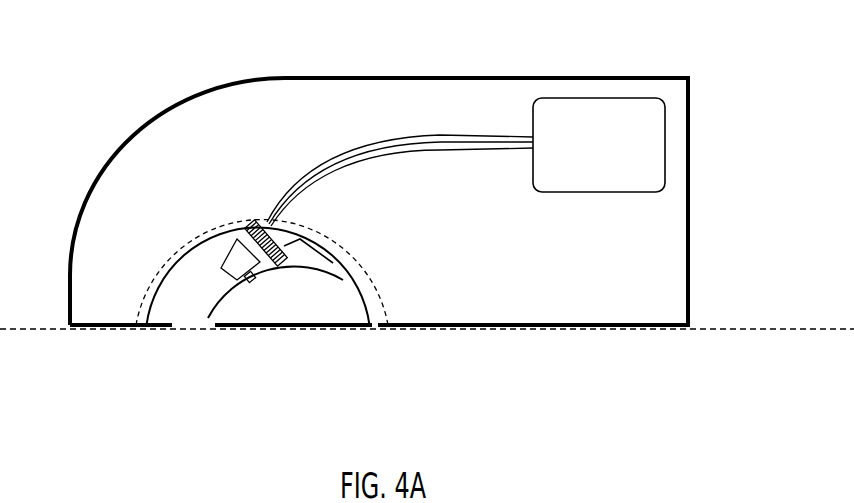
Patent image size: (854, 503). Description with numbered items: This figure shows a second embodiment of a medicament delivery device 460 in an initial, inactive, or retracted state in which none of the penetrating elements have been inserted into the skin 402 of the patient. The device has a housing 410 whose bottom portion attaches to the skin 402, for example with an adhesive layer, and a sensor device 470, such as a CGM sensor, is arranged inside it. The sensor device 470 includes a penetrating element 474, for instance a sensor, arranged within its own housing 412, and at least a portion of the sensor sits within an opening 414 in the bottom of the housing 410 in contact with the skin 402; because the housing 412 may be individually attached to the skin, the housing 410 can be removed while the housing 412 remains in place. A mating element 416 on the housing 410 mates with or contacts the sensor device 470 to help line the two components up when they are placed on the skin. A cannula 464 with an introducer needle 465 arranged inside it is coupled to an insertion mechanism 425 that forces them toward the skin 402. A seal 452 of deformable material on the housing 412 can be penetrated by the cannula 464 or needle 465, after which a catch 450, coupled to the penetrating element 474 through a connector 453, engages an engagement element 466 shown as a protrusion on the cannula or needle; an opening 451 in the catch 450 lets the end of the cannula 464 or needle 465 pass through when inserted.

The skin 402 is at (765, 327).
The housing 410 is at (578, 77).
The housing 412 is at (368, 312).
The opening 414 is at (188, 364).
The mating element 416 is at (236, 220).
The insertion mechanism 425 is at (614, 183).
The catch 450 is at (235, 240).
The opening 451 is at (216, 275).
The seal 452 is at (270, 223).
The connector 453 is at (253, 281).
The medicament delivery device 460 is at (628, 311).
The cannula 464 is at (442, 150).
The needle 465 is at (347, 153).
The engagement element 466 is at (272, 203).
The sensor device 470 is at (310, 315).
The penetrating element 474 is at (318, 271).